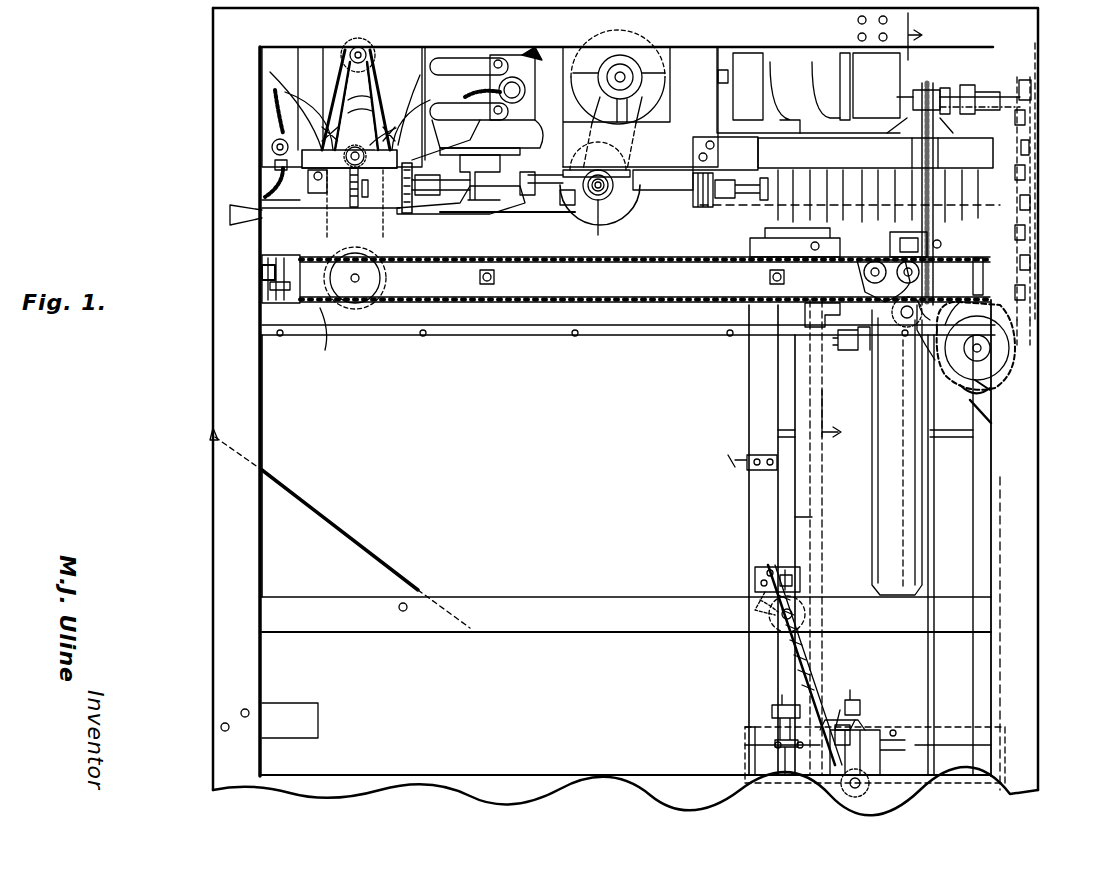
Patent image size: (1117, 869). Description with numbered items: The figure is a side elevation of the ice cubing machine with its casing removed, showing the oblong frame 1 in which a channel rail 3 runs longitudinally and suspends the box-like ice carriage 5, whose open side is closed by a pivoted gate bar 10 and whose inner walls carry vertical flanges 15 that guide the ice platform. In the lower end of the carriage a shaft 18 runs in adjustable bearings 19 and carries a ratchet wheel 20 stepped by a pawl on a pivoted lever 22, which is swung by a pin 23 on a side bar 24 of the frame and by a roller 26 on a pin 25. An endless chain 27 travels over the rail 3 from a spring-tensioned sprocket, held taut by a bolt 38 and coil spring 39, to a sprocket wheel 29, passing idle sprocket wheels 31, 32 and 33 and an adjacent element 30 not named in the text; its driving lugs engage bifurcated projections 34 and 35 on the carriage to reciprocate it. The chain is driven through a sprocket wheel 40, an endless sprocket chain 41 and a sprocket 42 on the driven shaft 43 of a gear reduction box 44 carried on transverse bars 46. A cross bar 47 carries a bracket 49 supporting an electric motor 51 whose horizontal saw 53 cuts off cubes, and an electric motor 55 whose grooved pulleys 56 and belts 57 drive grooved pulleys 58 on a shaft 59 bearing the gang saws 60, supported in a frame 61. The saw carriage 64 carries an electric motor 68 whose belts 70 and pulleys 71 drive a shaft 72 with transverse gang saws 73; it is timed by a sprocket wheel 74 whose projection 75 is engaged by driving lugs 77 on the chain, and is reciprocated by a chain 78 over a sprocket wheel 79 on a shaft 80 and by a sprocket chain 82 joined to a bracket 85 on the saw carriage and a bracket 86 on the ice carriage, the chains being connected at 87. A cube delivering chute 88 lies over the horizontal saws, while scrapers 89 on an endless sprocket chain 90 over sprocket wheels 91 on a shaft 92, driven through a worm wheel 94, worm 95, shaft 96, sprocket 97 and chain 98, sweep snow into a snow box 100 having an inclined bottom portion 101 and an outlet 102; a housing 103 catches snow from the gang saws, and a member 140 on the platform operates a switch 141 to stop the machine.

The oblong frame 1 is at (1053, 505).
The channel rail 3 is at (1052, 268).
The ice carriage 5 is at (861, 537).
The pivoted gate bar 10 is at (742, 460).
The vertically disposed flanges 15 is at (818, 517).
The shaft 18 is at (845, 748).
The adjustable bearings 19 is at (882, 760).
The ratchet wheel 20 is at (905, 755).
The pivoted lever 22 is at (780, 690).
The pin 23 is at (402, 612).
The side bar 24 is at (528, 636).
The pin 25 is at (795, 614).
The roller 26 is at (810, 597).
The endless chain 27 is at (663, 302).
The sprocket wheel 29 is at (998, 306).
The sprocket 30 is at (897, 294).
The idle sprocket wheel 31 is at (324, 308).
The idle sprocket wheel 32 is at (877, 452).
The idle sprocket wheel 33 is at (860, 268).
The bifurcated projection 34 is at (945, 244).
The bifurcated projection 35 is at (822, 327).
The bolt 38 is at (283, 295).
The coil spring 39 is at (268, 268).
The sprocket wheel 40 is at (356, 302).
The endless sprocket chain 41 is at (310, 200).
The sprocket 42 is at (343, 58).
The driven shaft 43 is at (362, 47).
The gear reduction box 44 is at (330, 72).
The transverse bars 46 is at (302, 162).
The cross bar 47 is at (487, 160).
The bracket 49 is at (528, 54).
The electric motor 51 is at (466, 103).
The horizontally disposed saw 53 is at (503, 222).
The electric motor 55 is at (650, 58).
The grooved pulleys 56 is at (615, 68).
The belts 57 is at (640, 112).
The grooved pulleys 58 is at (599, 200).
The shaft 59 is at (600, 180).
The saws 60 is at (628, 208).
The frame 61 is at (640, 107).
The saw carriage 64 is at (875, 153).
The electric motor 68 is at (808, 90).
The belts 70 is at (710, 212).
The pulleys 71 is at (688, 196).
The shaft 72 is at (760, 196).
The saws 73 is at (805, 185).
The sprocket wheel 74 is at (990, 380).
The projection 75 is at (953, 332).
The driving lugs 77 is at (825, 262).
The chain 78 is at (1034, 168).
The sprocket wheel 79 is at (1034, 86).
The shaft 80 is at (968, 103).
The sprocket chain 82 is at (940, 160).
The bracket 85 is at (905, 135).
The bracket 86 is at (862, 352).
The chain connection 87 is at (928, 92).
The cube delivering chute 88 is at (262, 212).
The scrapers 89 is at (412, 220).
The endless sprocket chain 90 is at (414, 170).
The sprocket wheels 91 is at (414, 182).
The shaft 92 is at (440, 200).
The worm wheel 94 is at (354, 208).
The worm 95 is at (338, 128).
The shaft 96 is at (365, 162).
The sprocket 97 is at (399, 121).
The chain 98 is at (376, 95).
The snow box 100 is at (420, 466).
The inclined bottom portion 101 is at (356, 512).
The outlet 102 is at (213, 435).
The housing 103 is at (655, 172).
The member 140 is at (772, 712).
The switch 141 is at (328, 737).